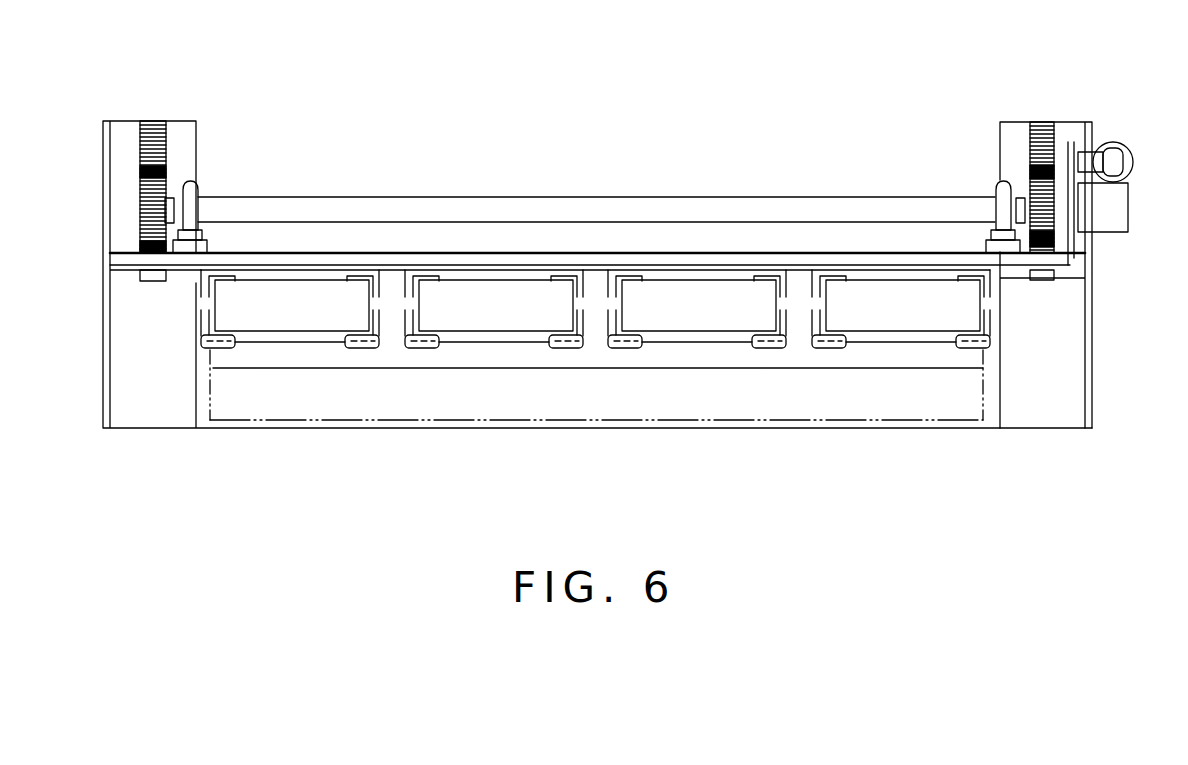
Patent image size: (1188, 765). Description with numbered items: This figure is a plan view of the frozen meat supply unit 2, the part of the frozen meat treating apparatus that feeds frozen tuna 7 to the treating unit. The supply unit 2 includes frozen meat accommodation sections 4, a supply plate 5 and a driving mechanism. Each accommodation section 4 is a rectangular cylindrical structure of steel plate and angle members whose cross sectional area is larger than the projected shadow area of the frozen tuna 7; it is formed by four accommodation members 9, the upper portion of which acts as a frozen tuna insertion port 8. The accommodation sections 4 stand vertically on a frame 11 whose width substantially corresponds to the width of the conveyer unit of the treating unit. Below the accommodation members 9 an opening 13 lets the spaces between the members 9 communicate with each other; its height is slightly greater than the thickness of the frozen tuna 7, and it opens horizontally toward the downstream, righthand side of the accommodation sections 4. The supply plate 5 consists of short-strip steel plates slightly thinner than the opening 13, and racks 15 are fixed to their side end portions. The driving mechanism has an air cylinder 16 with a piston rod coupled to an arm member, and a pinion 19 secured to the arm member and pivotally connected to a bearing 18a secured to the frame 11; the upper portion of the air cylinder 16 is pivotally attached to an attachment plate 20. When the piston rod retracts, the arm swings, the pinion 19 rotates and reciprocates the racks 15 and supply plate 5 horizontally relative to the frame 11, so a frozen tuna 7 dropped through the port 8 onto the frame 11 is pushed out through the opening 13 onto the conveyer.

The frozen meat supply unit 2 is at (641, 131).
The frozen meat accommodation section 4 is at (306, 336).
The supply plate 5 is at (573, 358).
The frozen tuna 7 is at (277, 292).
The frozen tuna insertion port 8 is at (258, 336).
The accommodation member 9 is at (412, 272).
The frame 11 is at (153, 413).
The opening 13 is at (571, 259).
The rack 15 is at (150, 130).
The air cylinder 16 is at (1118, 148).
The bearing 18a is at (193, 192).
The pinion 19 is at (157, 192).
The attachment plate 20 is at (1078, 242).